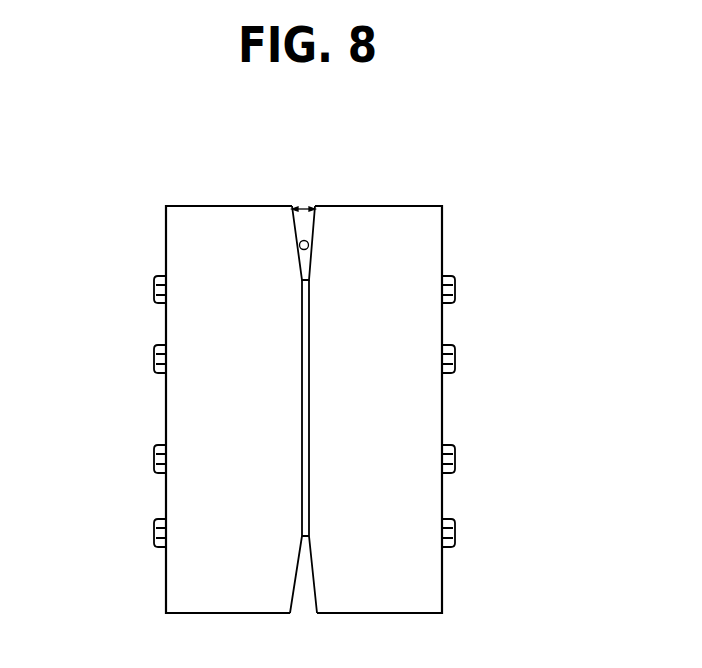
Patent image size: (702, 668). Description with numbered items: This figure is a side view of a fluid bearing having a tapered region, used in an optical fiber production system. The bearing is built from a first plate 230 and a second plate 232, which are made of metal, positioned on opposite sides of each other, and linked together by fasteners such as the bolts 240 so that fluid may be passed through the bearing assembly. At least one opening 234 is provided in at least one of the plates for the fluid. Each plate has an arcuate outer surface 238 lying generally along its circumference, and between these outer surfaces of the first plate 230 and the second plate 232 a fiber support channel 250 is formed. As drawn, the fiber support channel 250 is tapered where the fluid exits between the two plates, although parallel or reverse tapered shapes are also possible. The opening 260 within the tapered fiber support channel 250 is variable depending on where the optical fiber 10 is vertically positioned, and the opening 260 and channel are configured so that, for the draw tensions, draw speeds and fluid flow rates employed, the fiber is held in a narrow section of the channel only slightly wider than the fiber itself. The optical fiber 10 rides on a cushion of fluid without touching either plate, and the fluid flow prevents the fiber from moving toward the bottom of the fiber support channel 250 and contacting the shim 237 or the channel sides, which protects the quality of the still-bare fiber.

The optical fiber 10 is at (309, 246).
The first plate 230 is at (156, 255).
The second plate 232 is at (454, 255).
The opening 234 is at (437, 206).
The shim 237 is at (310, 275).
The arcuate outer surface 238 is at (193, 206).
The bolts 240 is at (456, 291).
The fiber support channel 250 is at (314, 188).
The opening 260 is at (304, 204).